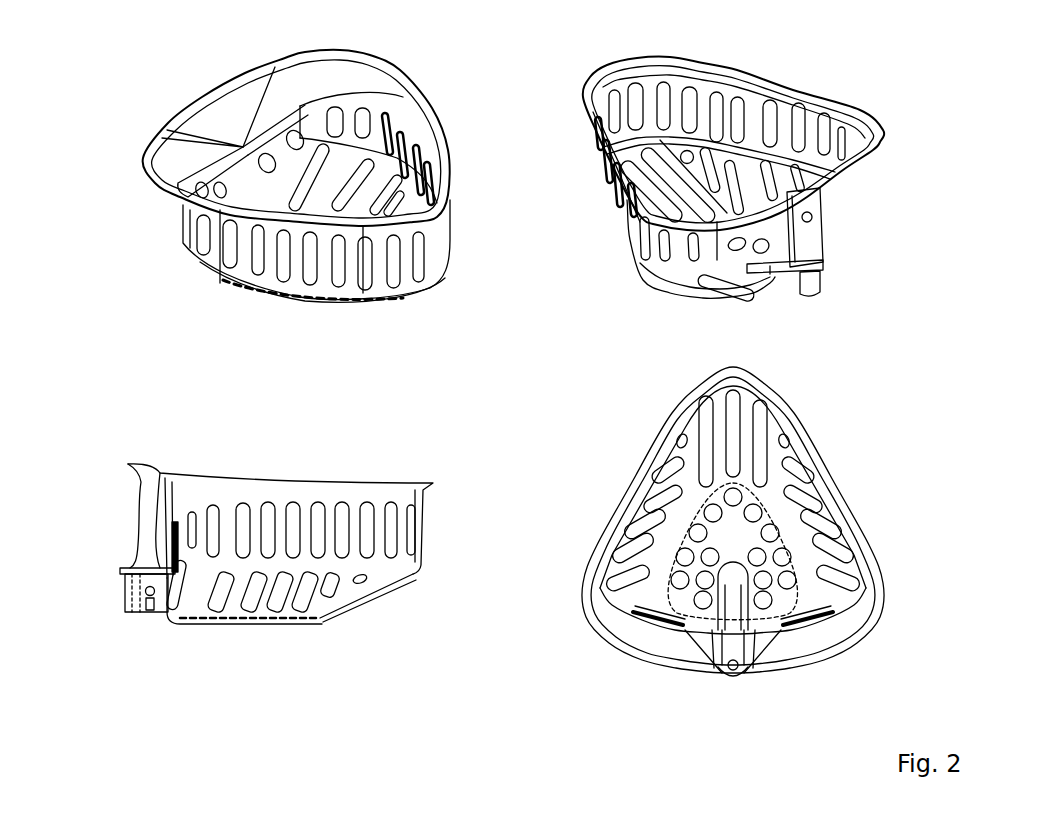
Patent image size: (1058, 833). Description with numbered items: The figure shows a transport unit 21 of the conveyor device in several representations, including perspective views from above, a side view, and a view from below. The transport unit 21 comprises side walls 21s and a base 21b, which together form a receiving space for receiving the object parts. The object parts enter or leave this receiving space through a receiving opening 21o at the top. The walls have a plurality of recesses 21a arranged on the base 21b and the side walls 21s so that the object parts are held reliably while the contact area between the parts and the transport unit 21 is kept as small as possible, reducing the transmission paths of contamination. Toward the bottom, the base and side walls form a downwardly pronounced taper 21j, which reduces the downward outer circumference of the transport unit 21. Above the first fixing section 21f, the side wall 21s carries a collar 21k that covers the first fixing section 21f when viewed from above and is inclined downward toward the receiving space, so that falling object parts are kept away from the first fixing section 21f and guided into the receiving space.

The transport unit 21 is at (571, 400).
The receiving opening 21o is at (148, 101).
The collar 21k is at (243, 103).
The recesses 21a is at (360, 113).
The side walls 21s is at (408, 171).
The taper 21j is at (280, 290).
The base 21b is at (270, 628).
The first fixing section 21f is at (807, 287).